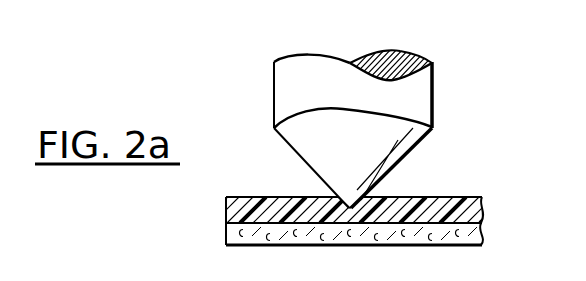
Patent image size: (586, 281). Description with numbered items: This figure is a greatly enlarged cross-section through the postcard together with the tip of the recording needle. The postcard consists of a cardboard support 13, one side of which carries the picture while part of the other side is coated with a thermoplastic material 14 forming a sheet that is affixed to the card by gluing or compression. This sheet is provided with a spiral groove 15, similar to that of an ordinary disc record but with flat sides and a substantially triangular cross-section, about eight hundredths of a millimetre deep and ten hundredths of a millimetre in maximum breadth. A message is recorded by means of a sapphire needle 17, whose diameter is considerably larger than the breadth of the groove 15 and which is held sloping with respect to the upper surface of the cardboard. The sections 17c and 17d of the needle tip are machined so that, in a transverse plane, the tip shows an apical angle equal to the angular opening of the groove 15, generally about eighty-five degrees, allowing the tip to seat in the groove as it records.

The sapphire needle 17 is at (433, 80).
The section of the needle tip 17c is at (287, 143).
The section of the needle tip 17d is at (423, 140).
The spiral groove 15 is at (408, 205).
The thermoplastic material 14 is at (242, 213).
The cardboard support 13 is at (263, 245).